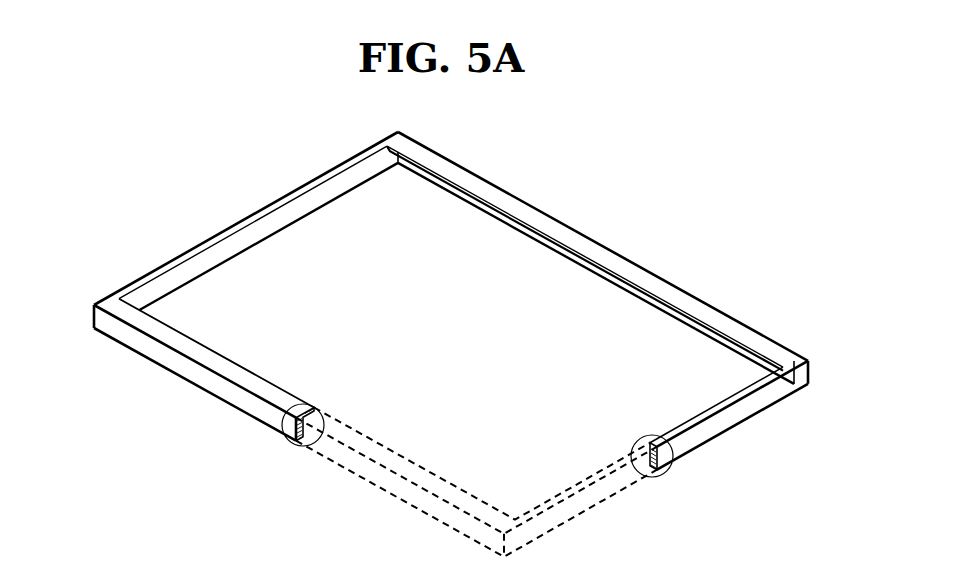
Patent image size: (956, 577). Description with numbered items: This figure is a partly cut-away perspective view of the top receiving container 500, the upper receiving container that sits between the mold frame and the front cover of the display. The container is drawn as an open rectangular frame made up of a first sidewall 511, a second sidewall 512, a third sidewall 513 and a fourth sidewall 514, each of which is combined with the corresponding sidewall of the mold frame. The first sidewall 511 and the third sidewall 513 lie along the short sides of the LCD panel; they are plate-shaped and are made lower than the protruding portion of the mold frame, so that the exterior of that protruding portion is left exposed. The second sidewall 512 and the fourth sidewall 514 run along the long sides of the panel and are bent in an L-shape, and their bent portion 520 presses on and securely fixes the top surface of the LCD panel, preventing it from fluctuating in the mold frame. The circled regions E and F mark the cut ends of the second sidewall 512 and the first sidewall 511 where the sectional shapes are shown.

The top receiving container 500 is at (708, 176).
The first sidewall 511 is at (698, 431).
The second sidewall 512 is at (195, 375).
The third sidewall 513 is at (192, 276).
The fourth sidewall 514 is at (680, 316).
The bent portion 520 is at (188, 352).
The detail region E is at (318, 408).
The detail region F is at (660, 474).